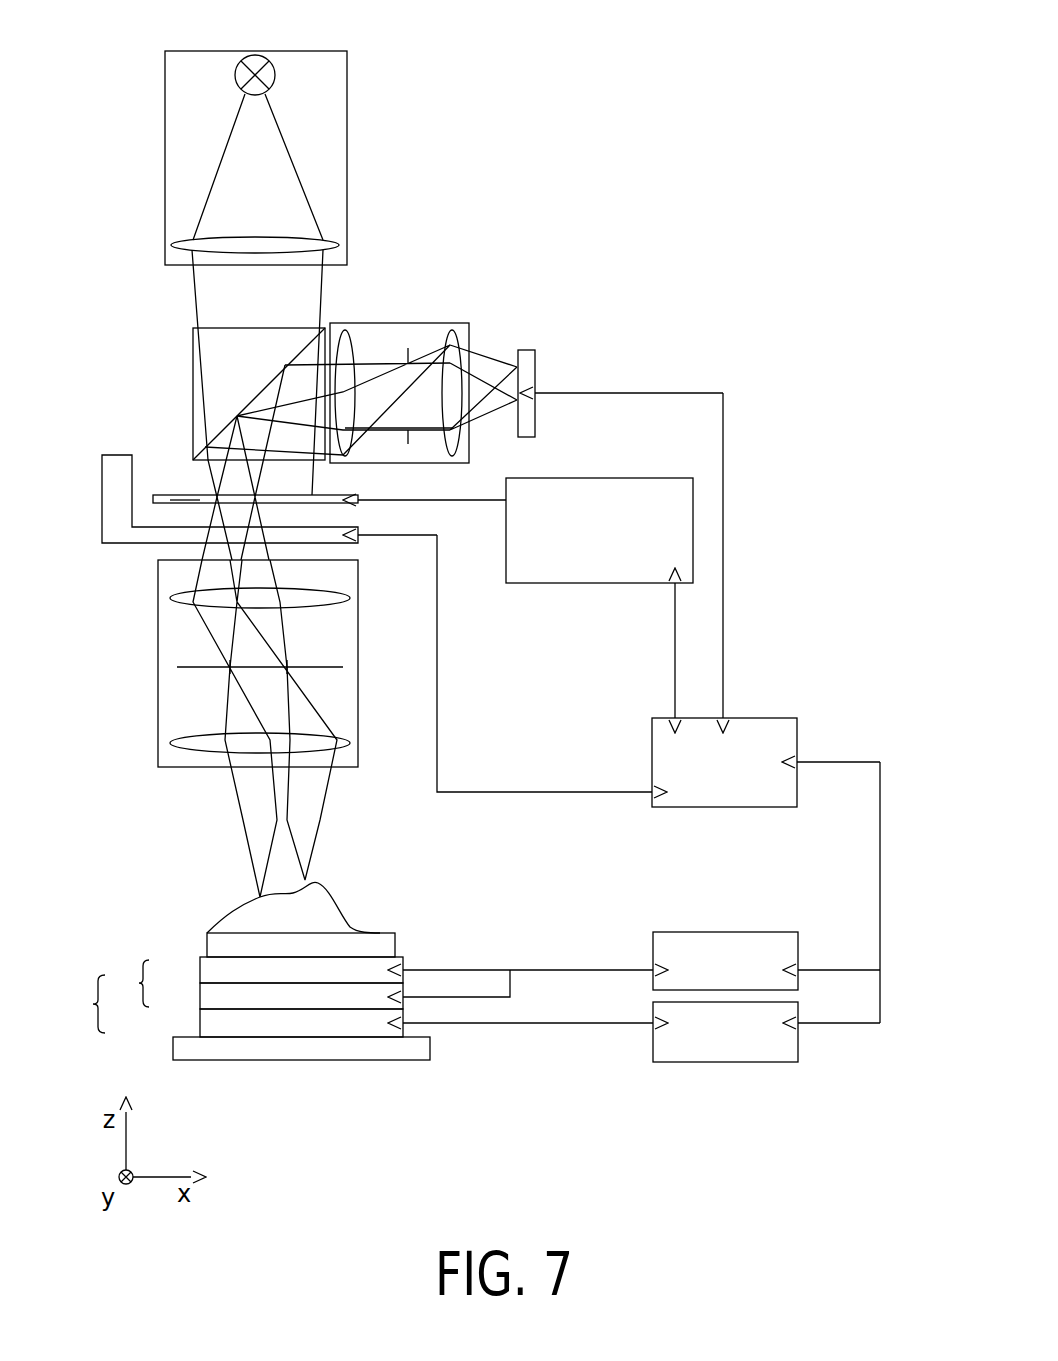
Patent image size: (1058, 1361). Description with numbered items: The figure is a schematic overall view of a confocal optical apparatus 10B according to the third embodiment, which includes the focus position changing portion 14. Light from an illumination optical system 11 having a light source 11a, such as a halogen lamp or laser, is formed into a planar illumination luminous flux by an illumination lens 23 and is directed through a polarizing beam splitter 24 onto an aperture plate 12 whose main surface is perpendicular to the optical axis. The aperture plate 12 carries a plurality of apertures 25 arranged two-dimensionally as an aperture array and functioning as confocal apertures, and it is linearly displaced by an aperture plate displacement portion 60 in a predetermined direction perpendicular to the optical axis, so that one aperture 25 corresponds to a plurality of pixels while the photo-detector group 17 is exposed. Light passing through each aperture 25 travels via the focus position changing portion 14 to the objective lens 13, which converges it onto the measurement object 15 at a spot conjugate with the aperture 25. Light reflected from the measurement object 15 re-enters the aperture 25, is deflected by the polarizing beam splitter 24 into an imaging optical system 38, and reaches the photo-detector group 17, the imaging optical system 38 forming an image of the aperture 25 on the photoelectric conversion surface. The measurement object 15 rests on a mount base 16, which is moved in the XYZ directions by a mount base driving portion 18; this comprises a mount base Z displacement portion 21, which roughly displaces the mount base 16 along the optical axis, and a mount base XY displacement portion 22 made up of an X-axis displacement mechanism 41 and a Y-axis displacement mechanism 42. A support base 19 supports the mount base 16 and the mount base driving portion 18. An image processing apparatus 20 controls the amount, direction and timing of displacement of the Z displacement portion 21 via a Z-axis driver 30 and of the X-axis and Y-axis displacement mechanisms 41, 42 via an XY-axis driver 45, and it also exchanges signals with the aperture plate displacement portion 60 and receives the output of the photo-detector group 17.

The confocal optical apparatus 10B is at (720, 172).
The illumination optical system 11 is at (278, 51).
The light source 11a is at (275, 73).
The illumination lens 23 is at (330, 242).
The polarizing beam splitter 24 is at (193, 346).
The imaging optical system 38 is at (396, 323).
The photo-detector group 17 is at (531, 350).
The focus position changing portion 14 is at (110, 453).
The aperture plate 12 is at (160, 495).
The apertures 25 is at (176, 498).
The objective lens 13 is at (154, 610).
The aperture plate displacement portion 60 is at (650, 478).
The image processing apparatus 20 is at (750, 718).
The XY-axis driver 45 is at (750, 932).
The Z-axis driver 30 is at (752, 1062).
The measurement object 15 is at (240, 910).
The mount base 16 is at (207, 945).
The Y-axis displacement mechanism 42 is at (200, 970).
The X-axis displacement mechanism 41 is at (200, 999).
The mount base XY displacement portion 22 is at (129, 983).
The mount base Z displacement portion 21 is at (200, 1025).
The mount base driving portion 18 is at (84, 1004).
The support base 19 is at (173, 1050).